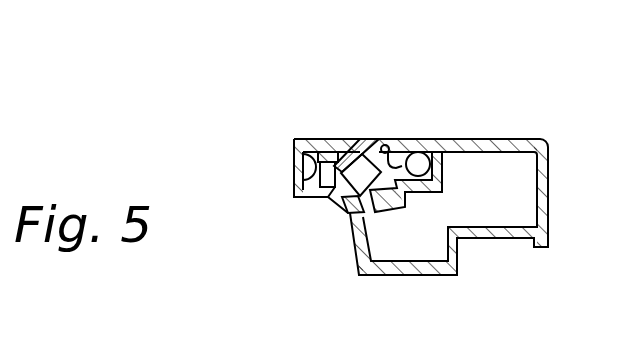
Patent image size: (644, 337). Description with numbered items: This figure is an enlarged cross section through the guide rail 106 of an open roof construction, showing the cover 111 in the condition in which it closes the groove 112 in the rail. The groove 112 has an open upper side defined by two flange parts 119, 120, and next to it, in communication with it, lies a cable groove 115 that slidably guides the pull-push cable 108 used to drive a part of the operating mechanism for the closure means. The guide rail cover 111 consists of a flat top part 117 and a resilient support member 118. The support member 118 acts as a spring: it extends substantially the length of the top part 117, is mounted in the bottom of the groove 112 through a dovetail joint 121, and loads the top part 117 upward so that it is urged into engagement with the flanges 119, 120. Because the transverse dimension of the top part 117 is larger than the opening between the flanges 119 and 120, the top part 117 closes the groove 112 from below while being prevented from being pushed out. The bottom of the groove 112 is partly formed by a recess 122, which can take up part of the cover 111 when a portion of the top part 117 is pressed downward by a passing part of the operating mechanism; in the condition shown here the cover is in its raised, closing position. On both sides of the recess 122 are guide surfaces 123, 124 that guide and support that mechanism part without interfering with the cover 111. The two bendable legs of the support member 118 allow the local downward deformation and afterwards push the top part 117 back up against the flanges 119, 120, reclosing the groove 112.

The guide rail 106 is at (546, 184).
The pull-push cable 108 is at (442, 139).
The guide rail cover 111 is at (349, 126).
The groove 112 is at (307, 166).
The cable groove 115 is at (420, 138).
The flat top part 117 is at (331, 140).
The resilient support member 118 is at (346, 213).
The flange part 119 is at (405, 140).
The flange part 120 is at (311, 141).
The dovetail joint 121 is at (357, 205).
The recess 122 is at (340, 200).
The guide surface 123 is at (303, 155).
The guide surface 124 is at (381, 142).